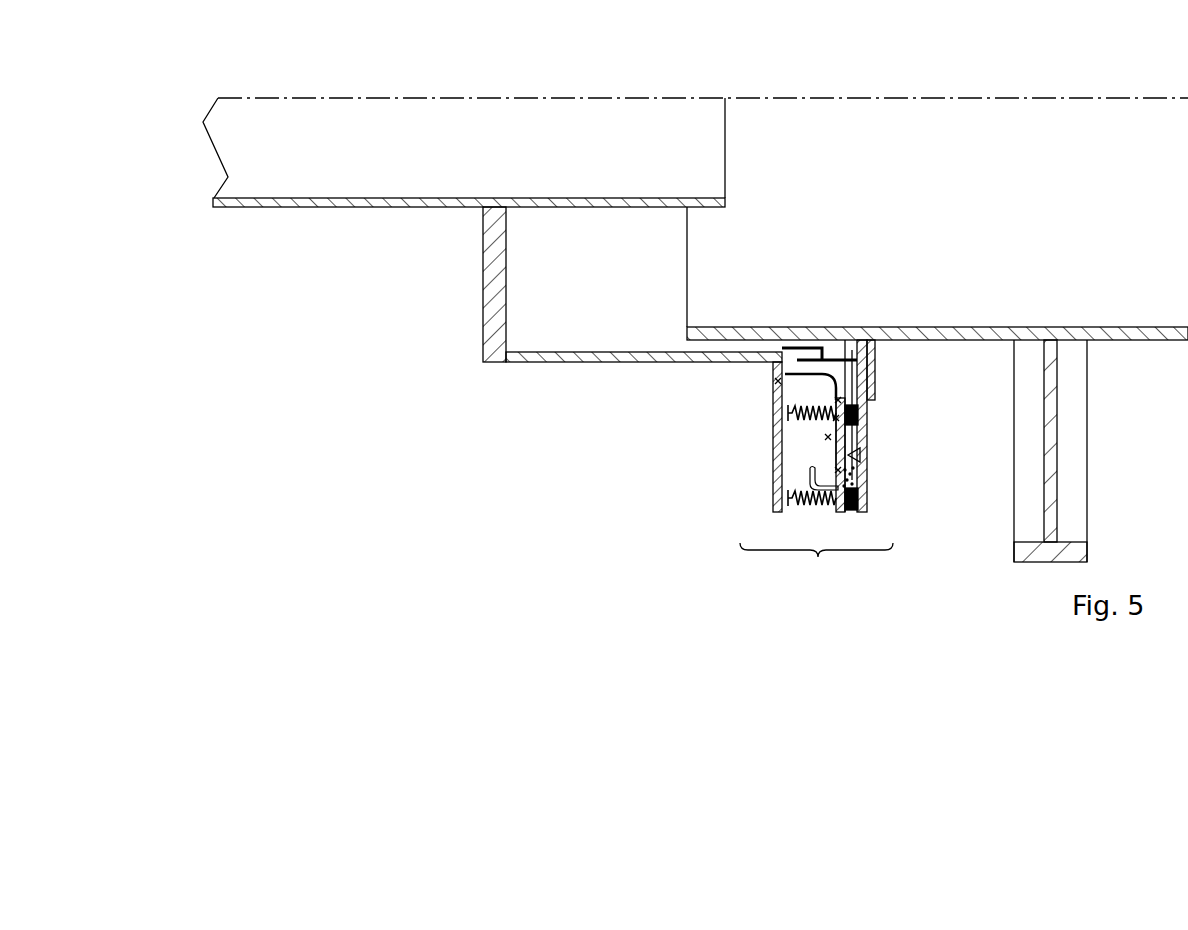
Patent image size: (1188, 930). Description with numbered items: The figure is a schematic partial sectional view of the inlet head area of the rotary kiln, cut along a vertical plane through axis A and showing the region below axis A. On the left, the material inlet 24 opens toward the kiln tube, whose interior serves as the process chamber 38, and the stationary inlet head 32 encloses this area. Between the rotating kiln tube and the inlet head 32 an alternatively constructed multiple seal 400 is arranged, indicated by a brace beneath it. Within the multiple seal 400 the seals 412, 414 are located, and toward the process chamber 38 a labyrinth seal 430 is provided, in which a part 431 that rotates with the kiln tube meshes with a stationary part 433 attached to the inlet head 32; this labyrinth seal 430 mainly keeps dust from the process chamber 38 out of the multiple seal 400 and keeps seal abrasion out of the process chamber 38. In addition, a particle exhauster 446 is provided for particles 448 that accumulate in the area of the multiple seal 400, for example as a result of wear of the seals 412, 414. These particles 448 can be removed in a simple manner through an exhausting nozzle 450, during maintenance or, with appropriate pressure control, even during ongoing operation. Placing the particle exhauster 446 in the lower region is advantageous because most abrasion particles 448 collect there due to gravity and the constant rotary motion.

The material inlet 24 is at (228, 207).
The inlet head 32 is at (514, 402).
The process chamber 38 is at (1010, 217).
The multiple seal 400 is at (827, 435).
The seal 412 is at (850, 403).
The seal 414 is at (853, 512).
The labyrinth seal 430 is at (838, 337).
The part of labyrinth seal 431 is at (872, 342).
The part of labyrinth seal 433 is at (800, 342).
The particle exhauster 446 is at (858, 443).
The particles 448 is at (853, 468).
The exhausting nozzle 450 is at (806, 474).
The axis A is at (951, 98).